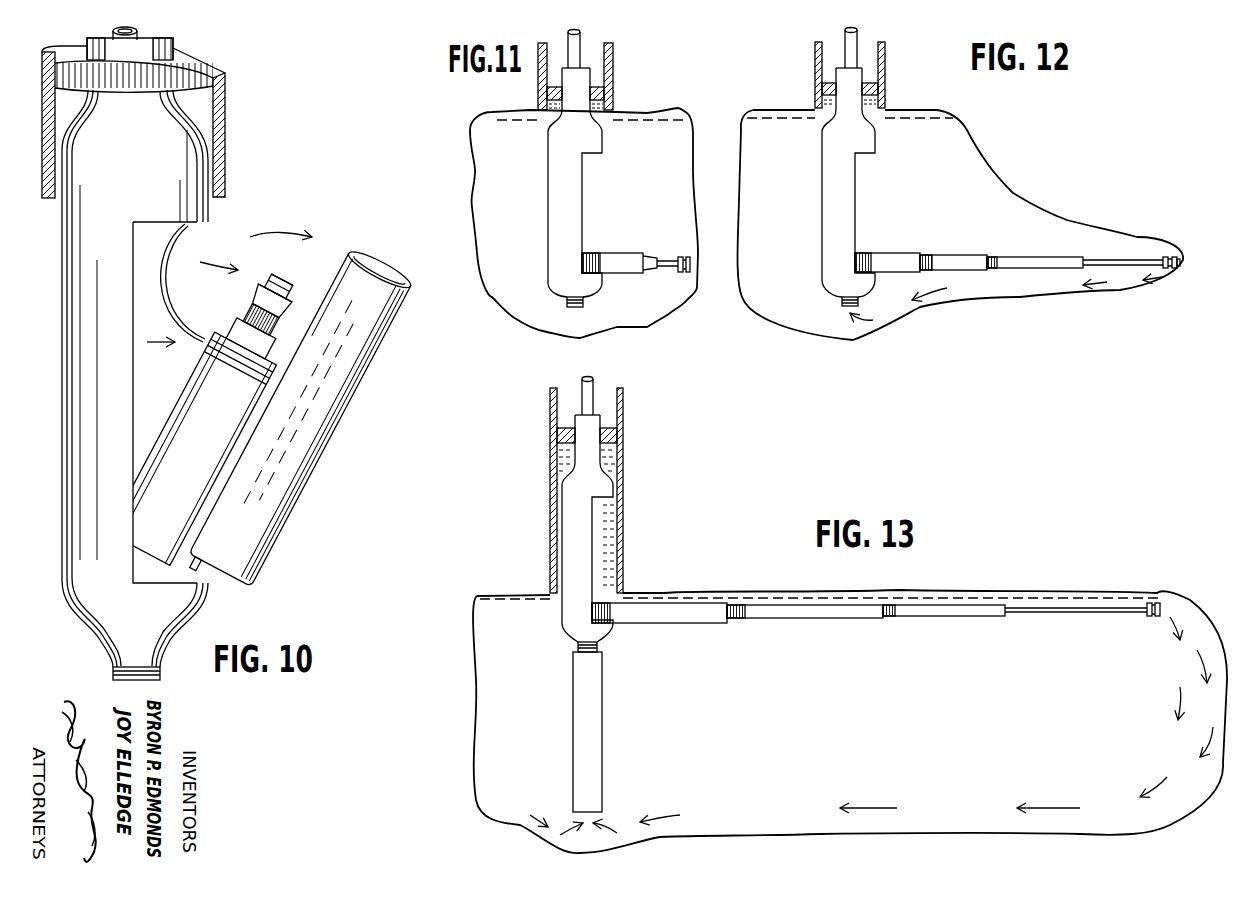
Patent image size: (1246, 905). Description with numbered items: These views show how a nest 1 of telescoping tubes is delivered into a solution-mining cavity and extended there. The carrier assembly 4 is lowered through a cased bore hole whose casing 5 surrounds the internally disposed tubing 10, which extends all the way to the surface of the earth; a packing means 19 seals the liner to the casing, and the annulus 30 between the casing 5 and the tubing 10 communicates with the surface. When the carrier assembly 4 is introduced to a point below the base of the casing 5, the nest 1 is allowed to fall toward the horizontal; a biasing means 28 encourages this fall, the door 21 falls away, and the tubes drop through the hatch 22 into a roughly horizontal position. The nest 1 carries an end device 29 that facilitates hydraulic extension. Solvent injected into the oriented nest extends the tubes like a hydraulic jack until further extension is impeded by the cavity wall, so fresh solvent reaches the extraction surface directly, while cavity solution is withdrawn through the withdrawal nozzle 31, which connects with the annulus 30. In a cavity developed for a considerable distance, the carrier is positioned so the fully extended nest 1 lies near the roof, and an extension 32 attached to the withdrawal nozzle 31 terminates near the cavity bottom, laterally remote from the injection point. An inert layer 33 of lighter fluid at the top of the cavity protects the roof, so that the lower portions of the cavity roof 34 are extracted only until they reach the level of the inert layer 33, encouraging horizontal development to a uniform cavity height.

In FIG. 10, the nest 1 is at (238, 421).
In FIG. 11, the nest 1 is at (610, 253).
In FIG. 12, the nest 1 is at (965, 253).
In FIG. 13, the nest 1 is at (750, 616).
In FIG. 10, the carrier assembly 4 is at (66, 393).
In FIG. 11, the carrier assembly 4 is at (548, 190).
In FIG. 12, the carrier assembly 4 is at (822, 207).
In FIG. 13, the carrier assembly 4 is at (567, 533).
In FIG. 10, the casing 5 is at (227, 157).
In FIG. 11, the casing 5 is at (615, 93).
In FIG. 12, the casing 5 is at (887, 90).
In FIG. 13, the casing 5 is at (623, 457).
In FIG. 11, the tubing 10 is at (582, 36).
In FIG. 12, the tubing 10 is at (858, 33).
In FIG. 13, the tubing 10 is at (595, 380).
In FIG. 11, the packing means 19 is at (539, 86).
In FIG. 12, the packing means 19 is at (830, 83).
In FIG. 13, the packing means 19 is at (570, 427).
In FIG. 10, the door 21 is at (290, 504).
In FIG. 10, the hatch 22 is at (200, 250).
In FIG. 10, the biasing means 28 is at (168, 302).
In FIG. 10, the end device 29 is at (303, 286).
In FIG. 11, the annulus 30 is at (600, 63).
In FIG. 12, the annulus 30 is at (870, 58).
In FIG. 13, the annulus 30 is at (607, 405).
In FIG. 10, the withdrawal nozzle 31 is at (113, 675).
In FIG. 11, the withdrawal nozzle 31 is at (587, 304).
In FIG. 12, the withdrawal nozzle 31 is at (840, 300).
In FIG. 13, the withdrawal nozzle 31 is at (573, 647).
In FIG. 13, the extension 32 is at (578, 725).
In FIG. 11, the inert layer 33 is at (652, 117).
In FIG. 12, the inert layer 33 is at (787, 117).
In FIG. 13, the inert layer 33 is at (663, 593).
In FIG. 12, the cavity roof 34 is at (1045, 201).